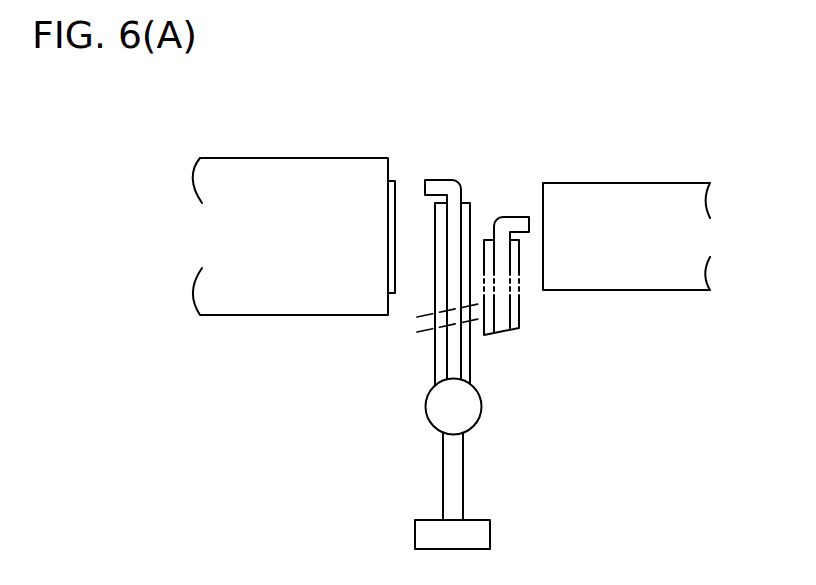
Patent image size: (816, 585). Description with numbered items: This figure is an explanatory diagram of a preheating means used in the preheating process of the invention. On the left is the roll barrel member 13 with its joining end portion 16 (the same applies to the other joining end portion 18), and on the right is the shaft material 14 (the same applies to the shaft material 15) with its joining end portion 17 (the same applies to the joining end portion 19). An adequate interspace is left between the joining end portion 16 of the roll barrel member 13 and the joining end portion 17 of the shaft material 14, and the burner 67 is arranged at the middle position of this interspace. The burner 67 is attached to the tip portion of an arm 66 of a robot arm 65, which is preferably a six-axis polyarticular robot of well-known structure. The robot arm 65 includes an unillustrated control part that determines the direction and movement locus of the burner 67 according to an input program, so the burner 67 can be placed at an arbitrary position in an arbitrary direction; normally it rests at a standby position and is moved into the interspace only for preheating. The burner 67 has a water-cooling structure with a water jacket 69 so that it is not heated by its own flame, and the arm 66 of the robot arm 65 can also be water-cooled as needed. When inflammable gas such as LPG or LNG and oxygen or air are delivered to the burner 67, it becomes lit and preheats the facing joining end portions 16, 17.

The roll barrel member 13 is at (294, 147).
The shaft material 14 is at (664, 201).
The shaft material 15 is at (628, 165).
The joining end portion 16 is at (457, 173).
The joining end portion 17 is at (583, 205).
The joining end portion 18 is at (395, 196).
The joining end portion 19 is at (543, 197).
The robot arm 65 is at (508, 514).
The arm 66 is at (417, 418).
The burner 67 is at (443, 170).
The water jacket 69 is at (435, 365).